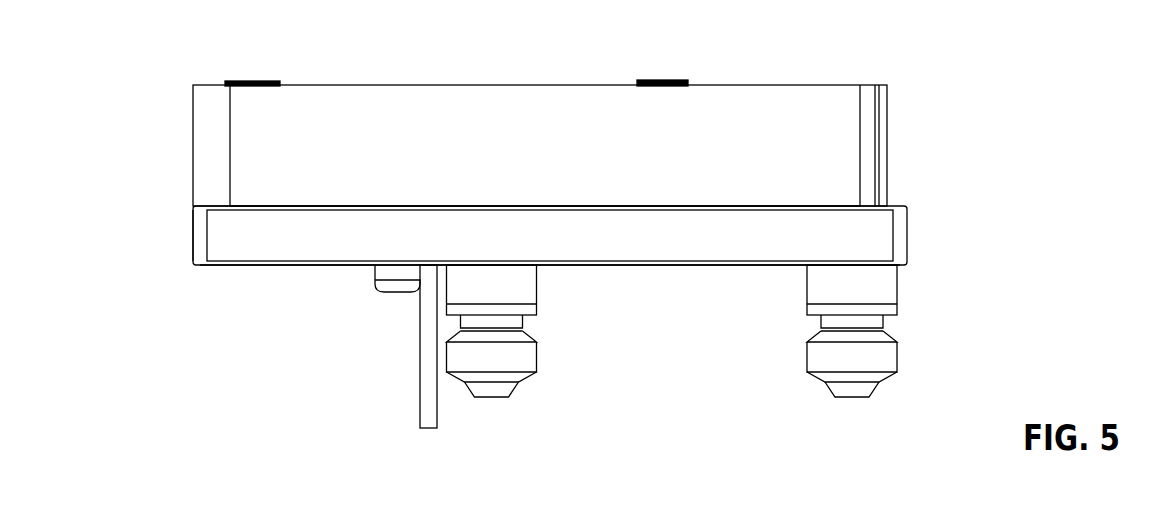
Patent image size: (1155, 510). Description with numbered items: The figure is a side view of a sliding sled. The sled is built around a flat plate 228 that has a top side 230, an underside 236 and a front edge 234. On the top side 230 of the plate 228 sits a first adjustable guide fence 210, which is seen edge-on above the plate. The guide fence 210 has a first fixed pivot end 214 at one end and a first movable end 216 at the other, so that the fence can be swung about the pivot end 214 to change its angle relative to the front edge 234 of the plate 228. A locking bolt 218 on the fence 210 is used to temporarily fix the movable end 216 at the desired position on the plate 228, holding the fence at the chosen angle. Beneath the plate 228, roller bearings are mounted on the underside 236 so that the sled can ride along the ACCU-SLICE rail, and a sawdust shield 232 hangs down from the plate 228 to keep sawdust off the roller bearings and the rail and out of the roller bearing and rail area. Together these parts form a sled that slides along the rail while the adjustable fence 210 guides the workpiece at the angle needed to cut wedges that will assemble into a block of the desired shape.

The first adjustable guide fence 210 is at (447, 102).
The first fixed pivot end 214 is at (210, 127).
The first movable end 216 is at (890, 158).
The locking bolt 218 is at (647, 83).
The flat plate 228 is at (878, 230).
The top side 230 is at (265, 206).
The sawdust shield 232 is at (418, 333).
The front edge 234 is at (190, 230).
The underside 236 is at (277, 267).